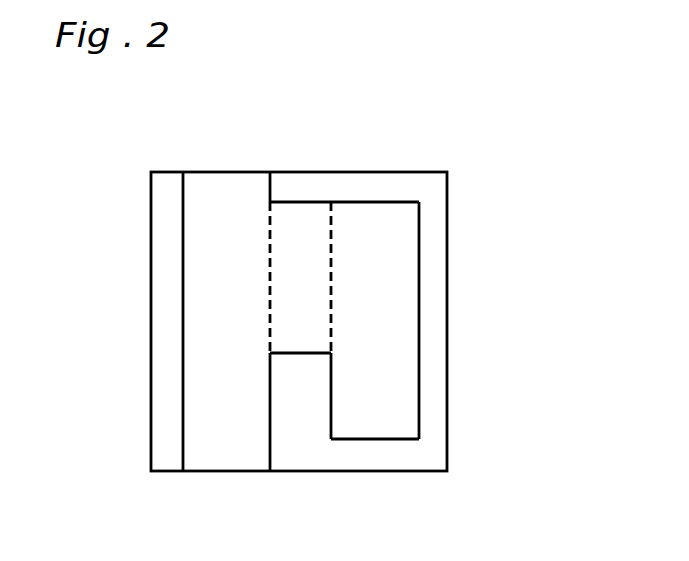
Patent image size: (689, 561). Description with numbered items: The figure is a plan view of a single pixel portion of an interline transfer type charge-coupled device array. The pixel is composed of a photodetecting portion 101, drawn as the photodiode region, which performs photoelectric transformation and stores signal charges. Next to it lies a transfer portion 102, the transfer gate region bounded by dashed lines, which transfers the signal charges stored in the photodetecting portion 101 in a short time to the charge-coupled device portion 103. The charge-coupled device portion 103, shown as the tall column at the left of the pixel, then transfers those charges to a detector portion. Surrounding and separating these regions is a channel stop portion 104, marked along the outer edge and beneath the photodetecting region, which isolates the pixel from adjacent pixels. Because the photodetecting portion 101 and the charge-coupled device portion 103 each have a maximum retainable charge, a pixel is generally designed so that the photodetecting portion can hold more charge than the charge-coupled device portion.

The photodetecting portion 101 is at (402, 256).
The transfer portion 102 is at (299, 226).
The CCD portion 103 is at (225, 203).
The channel stop portion 104 is at (160, 305).